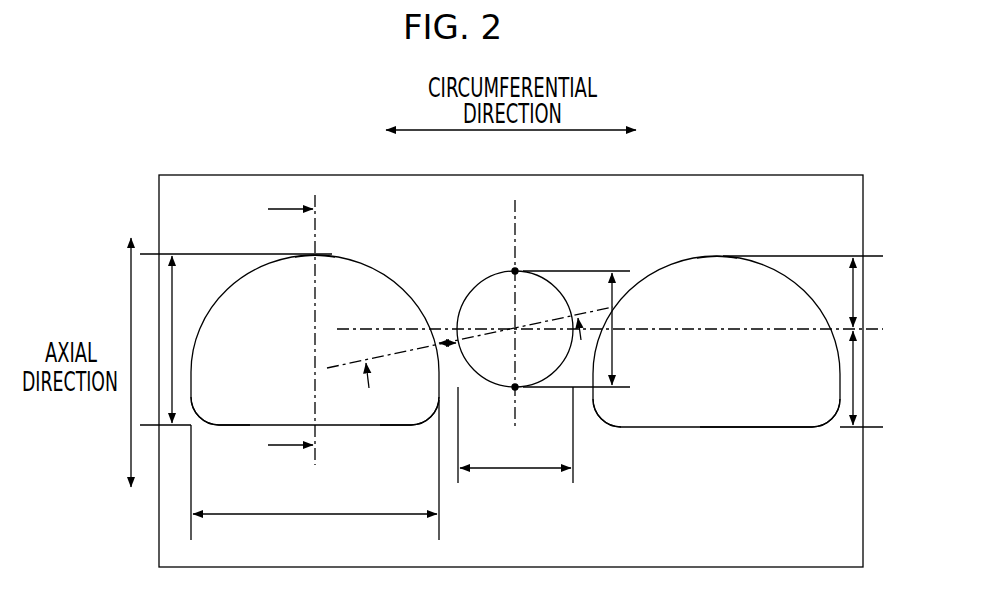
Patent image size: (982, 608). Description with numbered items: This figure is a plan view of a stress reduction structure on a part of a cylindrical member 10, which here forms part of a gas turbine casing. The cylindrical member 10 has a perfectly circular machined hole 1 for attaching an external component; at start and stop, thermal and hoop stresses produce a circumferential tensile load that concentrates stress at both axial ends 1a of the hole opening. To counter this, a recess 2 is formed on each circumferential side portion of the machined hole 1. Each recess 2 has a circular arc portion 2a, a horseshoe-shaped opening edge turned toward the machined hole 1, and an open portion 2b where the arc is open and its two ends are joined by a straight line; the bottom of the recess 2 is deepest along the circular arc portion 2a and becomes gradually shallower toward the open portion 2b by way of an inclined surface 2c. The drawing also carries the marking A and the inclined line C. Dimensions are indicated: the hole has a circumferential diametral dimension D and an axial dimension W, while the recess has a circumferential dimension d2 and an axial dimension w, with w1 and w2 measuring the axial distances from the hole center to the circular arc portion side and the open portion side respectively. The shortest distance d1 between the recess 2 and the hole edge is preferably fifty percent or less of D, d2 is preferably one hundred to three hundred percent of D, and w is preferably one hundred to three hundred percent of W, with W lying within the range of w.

The cylindrical member 10 is at (718, 176).
The recess 2 is at (372, 260).
The circular arc portion 2a is at (324, 254).
The open portion 2b is at (390, 428).
The inclined surface 2c is at (222, 412).
The machined hole 1 is at (541, 269).
The axial ends of opening portion 1a is at (515, 271).
The axial reference line A is at (282, 328).
The inclined center line C is at (475, 365).
The diametral dimension of machined hole in axial direction W is at (580, 329).
The diametral dimension of recess in axial direction w is at (235, 339).
The dimension of circular arc portion side of recess w1 is at (809, 291).
The dimension of open portion side of recess w2 is at (868, 379).
The shortest distance between recess and opening edge d1 is at (446, 340).
The diametral dimension of recess in circumferential direction d2 is at (315, 470).
The diametral dimension of machined hole in circumferential direction D is at (515, 435).